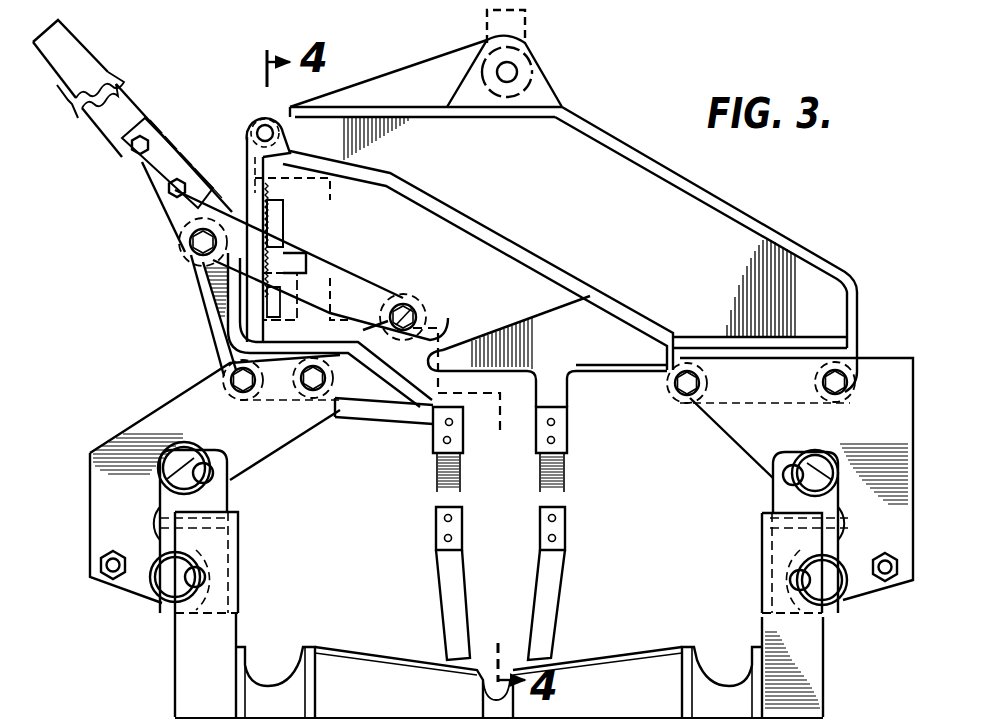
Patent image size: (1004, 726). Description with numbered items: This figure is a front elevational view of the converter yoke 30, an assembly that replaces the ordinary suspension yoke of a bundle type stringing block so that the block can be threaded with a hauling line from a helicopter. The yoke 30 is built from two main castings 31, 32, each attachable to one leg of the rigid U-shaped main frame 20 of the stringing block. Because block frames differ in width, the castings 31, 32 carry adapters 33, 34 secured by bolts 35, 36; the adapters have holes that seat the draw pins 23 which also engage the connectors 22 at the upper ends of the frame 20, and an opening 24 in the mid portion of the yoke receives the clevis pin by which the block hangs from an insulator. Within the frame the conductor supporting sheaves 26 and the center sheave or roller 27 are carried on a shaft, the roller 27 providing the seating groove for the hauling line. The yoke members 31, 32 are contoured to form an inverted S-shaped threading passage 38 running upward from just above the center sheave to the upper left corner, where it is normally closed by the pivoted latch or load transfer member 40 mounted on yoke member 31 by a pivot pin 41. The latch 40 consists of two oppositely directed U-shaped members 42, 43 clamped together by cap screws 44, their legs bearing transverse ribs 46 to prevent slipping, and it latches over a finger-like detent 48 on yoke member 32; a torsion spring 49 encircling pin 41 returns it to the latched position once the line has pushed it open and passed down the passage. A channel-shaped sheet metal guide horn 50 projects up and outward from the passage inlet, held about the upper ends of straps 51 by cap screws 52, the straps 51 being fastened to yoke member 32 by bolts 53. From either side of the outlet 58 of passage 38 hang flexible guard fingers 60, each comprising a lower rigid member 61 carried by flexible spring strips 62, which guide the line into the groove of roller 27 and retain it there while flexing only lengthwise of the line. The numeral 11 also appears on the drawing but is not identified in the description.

The clamping apparatus 11 is at (125, 378).
The main frame 20 is at (185, 640).
The connectors 22 is at (213, 500).
The draw pins 23 is at (208, 470).
The opening 24 is at (512, 74).
The conductor supporting sheaves 26 is at (270, 683).
The center sheave or roller 27 is at (608, 660).
The converter yoke 30 is at (752, 206).
The main casting (yoke member) 31 is at (633, 143).
The main casting (yoke member) 32 is at (197, 322).
The adapter 33 is at (883, 360).
The adapter 34 is at (193, 392).
The bolts 35 is at (705, 395).
The bolts 36 is at (240, 384).
The threading passage 38 is at (452, 260).
The latch member (load transfer means) 40 is at (246, 138).
The pivot pin 41 is at (262, 120).
The U-shaped member 42 is at (247, 200).
The U-shaped member 43 is at (281, 229).
The clamping cap screws 44 is at (323, 243).
The transverse ribs 46 is at (281, 196).
The latch detent 48 is at (317, 307).
The torsion spring 49 is at (263, 114).
The guide horn 50 is at (112, 82).
The straps 51 is at (353, 280).
The cap screws 52 is at (136, 156).
The bolts 53 is at (193, 250).
The outlet 58 is at (512, 467).
The guard fingers 60 is at (538, 545).
The lower rigid member 61 is at (450, 600).
The flexible spring strips 62 is at (437, 485).